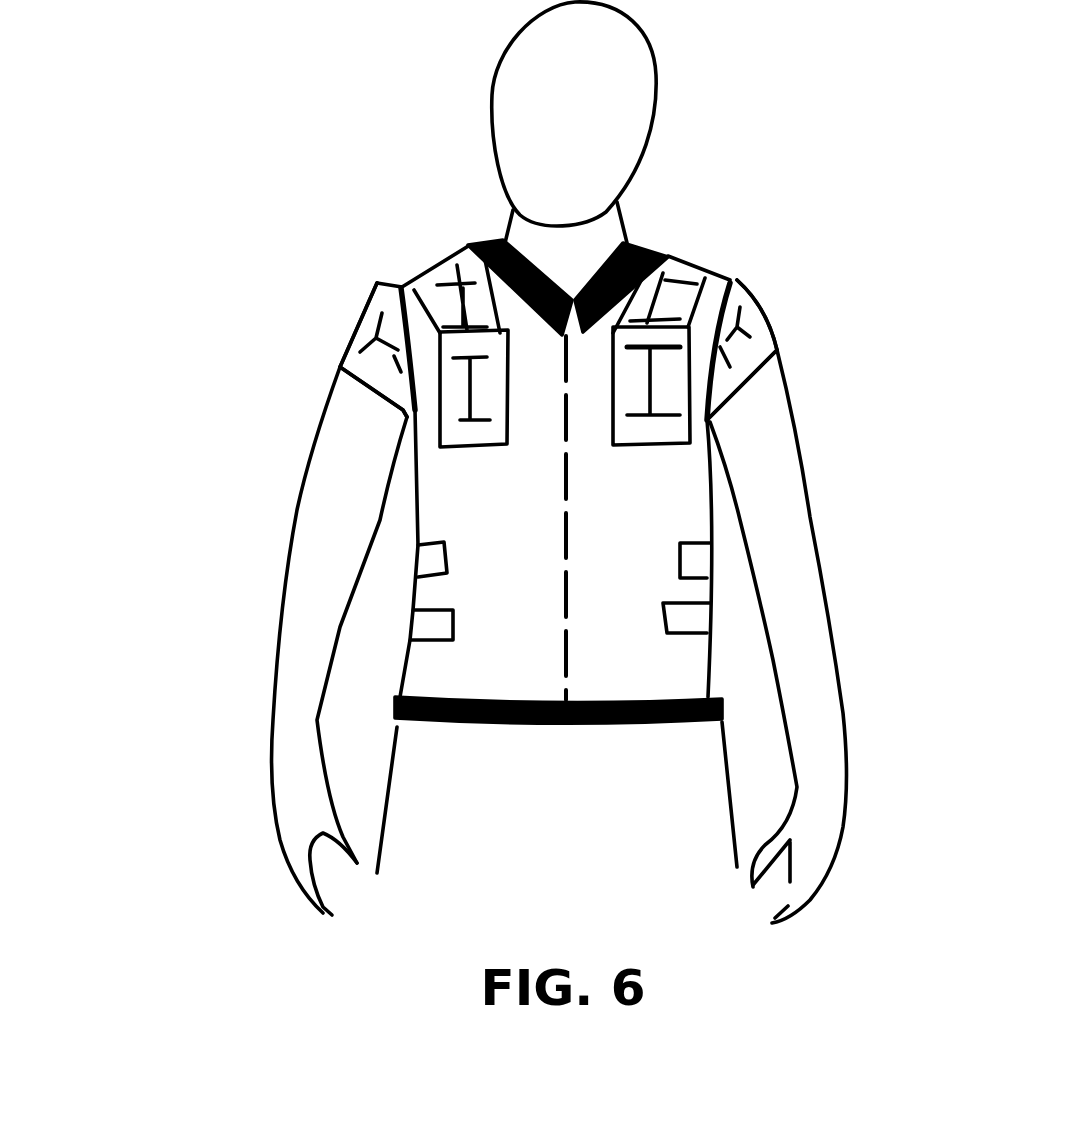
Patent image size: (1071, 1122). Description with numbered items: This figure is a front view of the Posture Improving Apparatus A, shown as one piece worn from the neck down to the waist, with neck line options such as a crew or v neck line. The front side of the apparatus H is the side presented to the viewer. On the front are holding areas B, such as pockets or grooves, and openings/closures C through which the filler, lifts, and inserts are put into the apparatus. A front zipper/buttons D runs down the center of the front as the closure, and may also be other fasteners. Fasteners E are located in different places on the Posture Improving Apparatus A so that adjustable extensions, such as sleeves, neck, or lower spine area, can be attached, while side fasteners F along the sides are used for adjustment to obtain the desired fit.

The Posture Improving Apparatus A is at (683, 476).
The holding areas B is at (299, 339).
The openings/closures C is at (430, 265).
The front zipper/buttons D is at (619, 546).
The fasteners E is at (348, 276).
The side fasteners F is at (970, 628).
The front side of the apparatus H is at (490, 485).